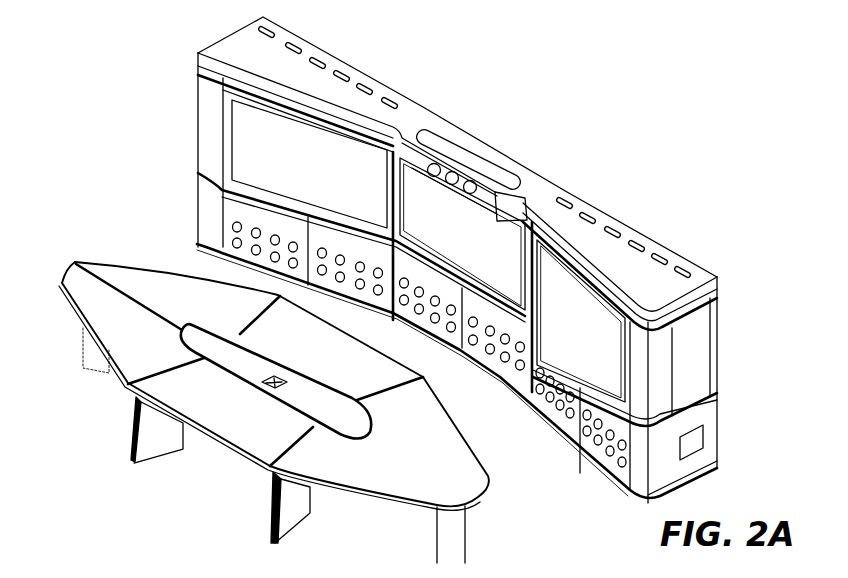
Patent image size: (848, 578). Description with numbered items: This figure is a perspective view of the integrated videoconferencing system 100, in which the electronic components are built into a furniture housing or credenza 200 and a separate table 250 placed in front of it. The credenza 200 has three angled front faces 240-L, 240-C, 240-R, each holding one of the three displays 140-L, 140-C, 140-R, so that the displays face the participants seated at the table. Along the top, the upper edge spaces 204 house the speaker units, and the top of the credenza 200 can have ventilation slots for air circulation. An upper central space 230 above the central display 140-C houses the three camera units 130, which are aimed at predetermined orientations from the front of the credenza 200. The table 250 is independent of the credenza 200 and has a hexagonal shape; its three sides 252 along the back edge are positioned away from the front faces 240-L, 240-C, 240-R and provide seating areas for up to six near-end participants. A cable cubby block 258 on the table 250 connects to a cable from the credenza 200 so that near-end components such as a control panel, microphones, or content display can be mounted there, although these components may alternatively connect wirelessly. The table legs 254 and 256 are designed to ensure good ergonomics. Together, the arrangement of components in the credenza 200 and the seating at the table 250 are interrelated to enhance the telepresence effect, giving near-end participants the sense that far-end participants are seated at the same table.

The system 100 is at (672, 103).
The camera units 130 is at (488, 187).
The left display 140-L is at (308, 159).
The central display 140-C is at (462, 234).
The right display 140-R is at (581, 321).
The credenza 200 is at (215, 42).
The upper edge spaces 204 is at (200, 76).
The upper central space 230 is at (476, 154).
The left angled front face 240-L is at (235, 214).
The central angled front face 240-C is at (452, 300).
The right angled front face 240-R is at (550, 363).
The table 250 is at (77, 263).
The table sides 252 is at (110, 370).
The table leg 254 is at (271, 530).
The table leg 256 is at (437, 542).
The cable cubby block 258 is at (276, 375).